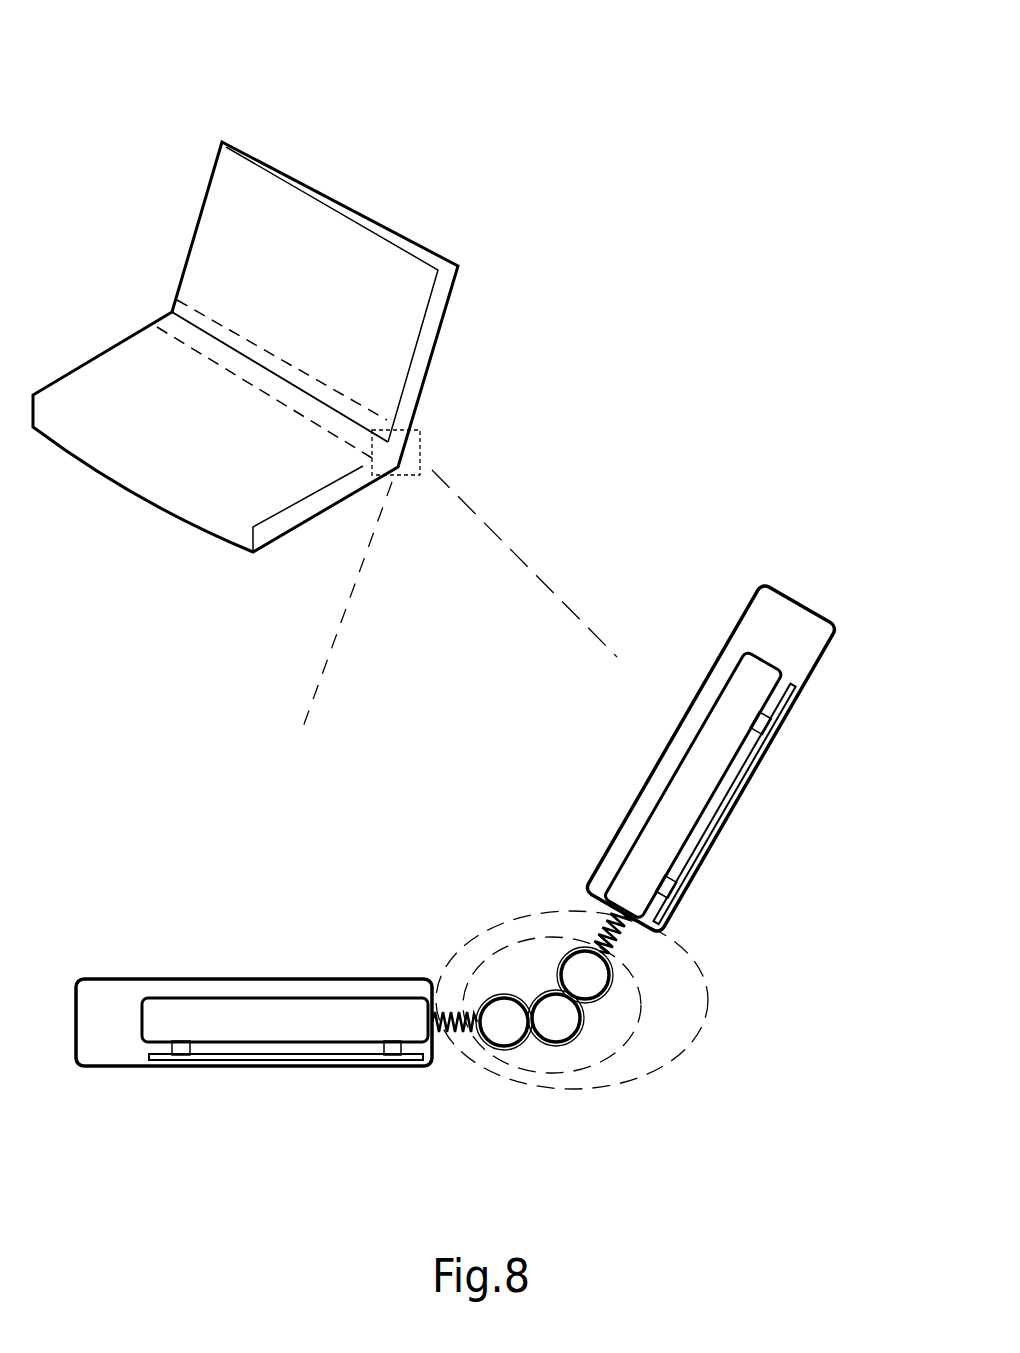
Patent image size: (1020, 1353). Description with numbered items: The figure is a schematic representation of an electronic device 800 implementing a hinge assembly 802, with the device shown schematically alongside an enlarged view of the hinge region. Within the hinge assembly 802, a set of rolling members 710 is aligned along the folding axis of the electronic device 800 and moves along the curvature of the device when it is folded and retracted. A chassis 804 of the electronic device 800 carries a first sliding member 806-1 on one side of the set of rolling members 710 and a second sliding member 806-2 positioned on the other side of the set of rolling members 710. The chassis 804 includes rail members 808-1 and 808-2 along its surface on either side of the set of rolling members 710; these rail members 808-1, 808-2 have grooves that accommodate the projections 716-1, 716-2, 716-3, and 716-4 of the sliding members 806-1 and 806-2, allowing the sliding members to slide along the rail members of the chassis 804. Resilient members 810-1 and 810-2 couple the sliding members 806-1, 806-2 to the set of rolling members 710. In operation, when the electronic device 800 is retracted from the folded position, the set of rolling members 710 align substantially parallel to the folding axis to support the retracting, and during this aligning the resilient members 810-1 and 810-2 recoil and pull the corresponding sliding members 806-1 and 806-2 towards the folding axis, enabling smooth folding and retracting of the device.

The electronic device 800 is at (134, 43).
The chassis 804 is at (348, 208).
The first sliding member 806-1 is at (685, 752).
The second sliding member 806-2 is at (252, 1002).
The rail member 808-1 is at (797, 687).
The rail member 808-2 is at (148, 1068).
The projection 716-1 is at (760, 728).
The projection 716-2 is at (667, 888).
The projection 716-3 is at (385, 1068).
The projection 716-4 is at (188, 1068).
The resilient member 810-1 is at (593, 930).
The resilient member 810-2 is at (455, 1028).
The set of rolling members 710 is at (505, 947).
The hinge assembly 802 is at (700, 962).